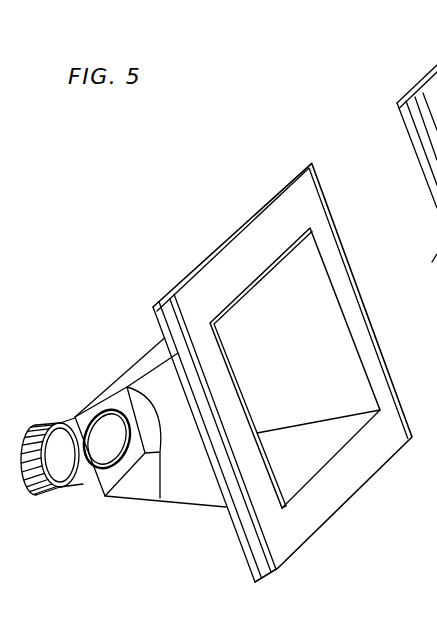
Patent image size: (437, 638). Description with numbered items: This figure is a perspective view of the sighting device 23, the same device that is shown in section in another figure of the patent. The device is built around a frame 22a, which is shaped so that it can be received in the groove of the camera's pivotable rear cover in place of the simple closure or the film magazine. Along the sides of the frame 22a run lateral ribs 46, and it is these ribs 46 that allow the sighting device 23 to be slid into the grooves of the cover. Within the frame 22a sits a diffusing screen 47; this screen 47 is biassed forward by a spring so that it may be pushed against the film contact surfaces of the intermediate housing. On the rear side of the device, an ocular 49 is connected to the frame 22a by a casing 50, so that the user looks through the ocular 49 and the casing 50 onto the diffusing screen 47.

The sighting device 23 is at (145, 264).
The lateral ribs 46 is at (342, 238).
The diffusing screen 47 is at (340, 365).
The frame 22a is at (307, 526).
The ocular 49 is at (83, 497).
The casing 50 is at (186, 490).